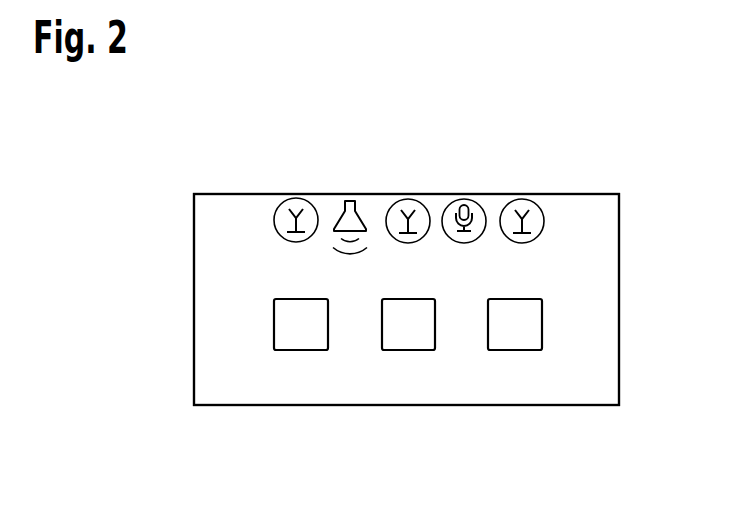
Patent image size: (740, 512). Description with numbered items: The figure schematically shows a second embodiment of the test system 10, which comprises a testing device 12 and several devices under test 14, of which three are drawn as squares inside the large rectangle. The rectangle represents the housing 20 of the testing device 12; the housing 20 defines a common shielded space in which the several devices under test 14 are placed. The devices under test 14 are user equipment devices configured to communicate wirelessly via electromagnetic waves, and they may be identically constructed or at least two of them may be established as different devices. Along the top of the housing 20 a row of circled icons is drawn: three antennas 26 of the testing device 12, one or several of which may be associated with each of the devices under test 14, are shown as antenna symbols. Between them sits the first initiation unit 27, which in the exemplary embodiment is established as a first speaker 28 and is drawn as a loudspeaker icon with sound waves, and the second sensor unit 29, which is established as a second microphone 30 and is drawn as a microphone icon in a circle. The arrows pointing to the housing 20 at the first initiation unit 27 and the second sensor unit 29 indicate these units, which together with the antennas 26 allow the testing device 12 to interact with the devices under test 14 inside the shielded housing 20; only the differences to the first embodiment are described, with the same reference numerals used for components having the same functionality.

The test system 10 is at (155, 173).
The testing device 12 is at (604, 193).
The housing 20 is at (406, 299).
The device under test 14 is at (305, 351).
The antenna 26 is at (290, 197).
The first initiation unit 27 is at (334, 195).
The first speaker 28 is at (350, 200).
The second sensor unit 29 is at (482, 195).
The second microphone 30 is at (470, 198).